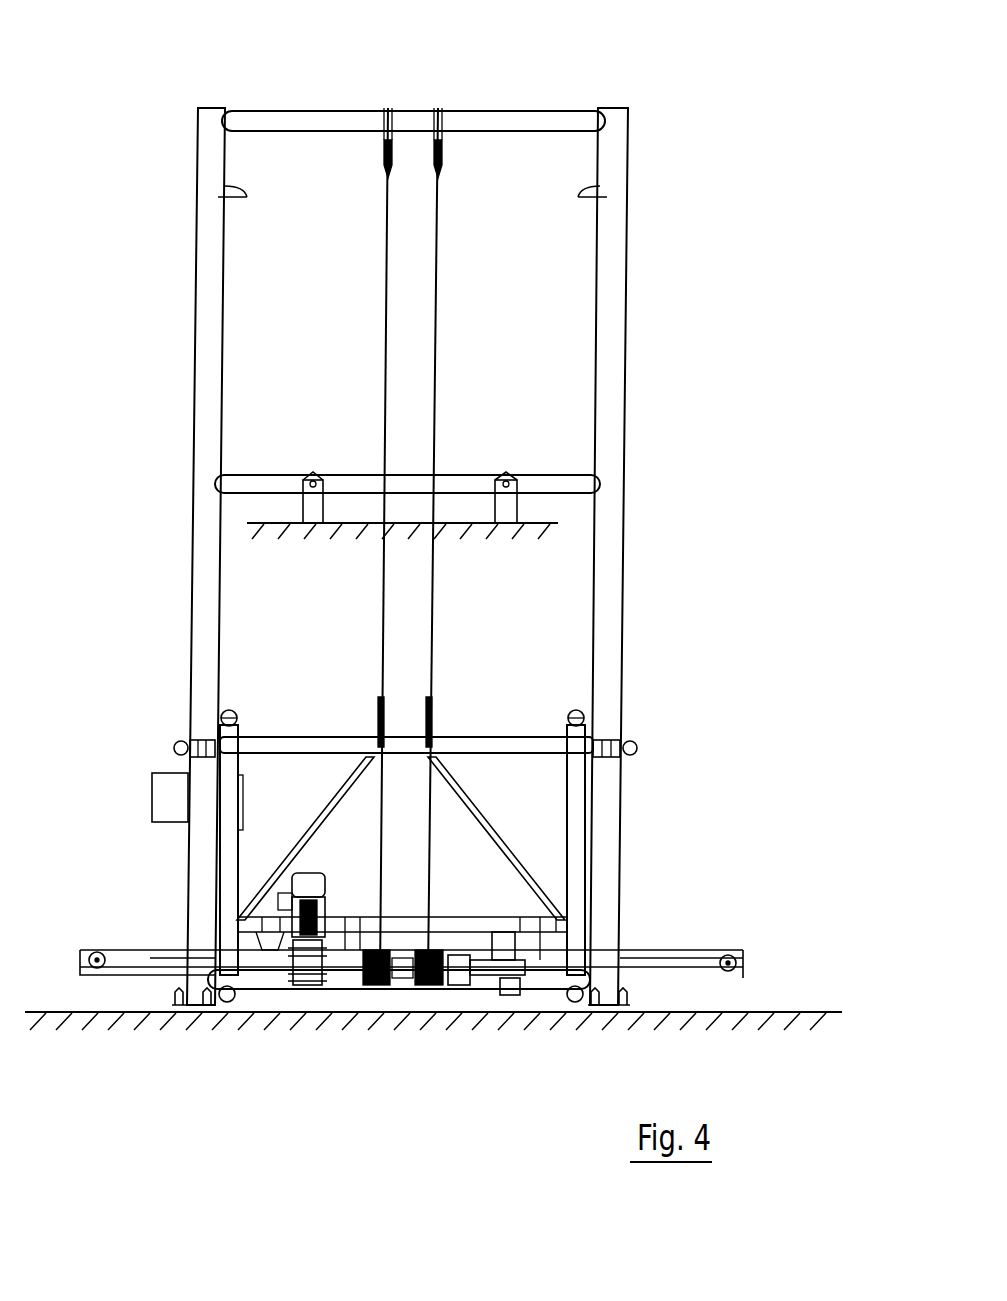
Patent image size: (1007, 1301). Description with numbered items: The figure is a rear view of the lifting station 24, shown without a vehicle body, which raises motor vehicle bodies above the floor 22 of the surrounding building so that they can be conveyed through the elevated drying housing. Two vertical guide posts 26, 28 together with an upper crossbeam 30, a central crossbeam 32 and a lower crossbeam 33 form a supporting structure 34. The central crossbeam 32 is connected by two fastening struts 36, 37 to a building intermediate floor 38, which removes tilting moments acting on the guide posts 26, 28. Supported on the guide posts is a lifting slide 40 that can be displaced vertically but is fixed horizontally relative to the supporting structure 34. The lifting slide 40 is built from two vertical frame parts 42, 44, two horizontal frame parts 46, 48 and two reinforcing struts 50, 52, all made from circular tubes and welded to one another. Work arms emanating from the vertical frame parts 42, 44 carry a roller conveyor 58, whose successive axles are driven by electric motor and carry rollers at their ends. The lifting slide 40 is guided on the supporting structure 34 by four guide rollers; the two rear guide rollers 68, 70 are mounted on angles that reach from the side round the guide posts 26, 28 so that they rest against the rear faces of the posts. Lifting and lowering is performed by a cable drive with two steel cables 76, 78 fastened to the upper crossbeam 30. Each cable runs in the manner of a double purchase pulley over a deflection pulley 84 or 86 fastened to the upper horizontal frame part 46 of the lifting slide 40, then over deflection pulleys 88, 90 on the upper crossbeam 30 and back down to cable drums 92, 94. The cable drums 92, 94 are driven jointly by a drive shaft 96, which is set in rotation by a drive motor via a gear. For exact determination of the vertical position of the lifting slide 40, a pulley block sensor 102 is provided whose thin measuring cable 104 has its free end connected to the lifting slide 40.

The floor 22 is at (786, 1013).
The lifting station 24 is at (446, 502).
The vertical guide post 26 is at (205, 323).
The vertical guide post 28 is at (607, 282).
The upper crossbeam 30 is at (263, 118).
The central crossbeam 32 is at (247, 480).
The lower crossbeam 33 is at (283, 977).
The supporting structure 34 is at (633, 380).
The fastening strut 36 is at (315, 473).
The fastening strut 37 is at (507, 473).
The building intermediate floor 38 is at (247, 525).
The lifting slide 40 is at (400, 866).
The vertical frame part 42 is at (232, 763).
The vertical frame part 44 is at (580, 793).
The upper horizontal frame part 46 is at (277, 748).
The horizontal frame part 48 is at (340, 925).
The reinforcing strut 50 is at (310, 818).
The reinforcing strut 52 is at (470, 784).
The roller conveyor 58 is at (687, 957).
The rear guide roller 68 is at (622, 745).
The rear guide roller 70 is at (195, 742).
The steel cable 76 is at (385, 268).
The steel cable 78 is at (438, 280).
The deflection pulley 84 is at (378, 712).
The deflection pulley 86 is at (433, 712).
The deflection pulley 88 is at (385, 148).
The deflection pulley 90 is at (442, 152).
The cable drum 92 is at (385, 937).
The cable drum 94 is at (440, 937).
The drive shaft 96 is at (362, 978).
The pulley block sensor 102 is at (508, 992).
The measuring cable 104 is at (503, 937).